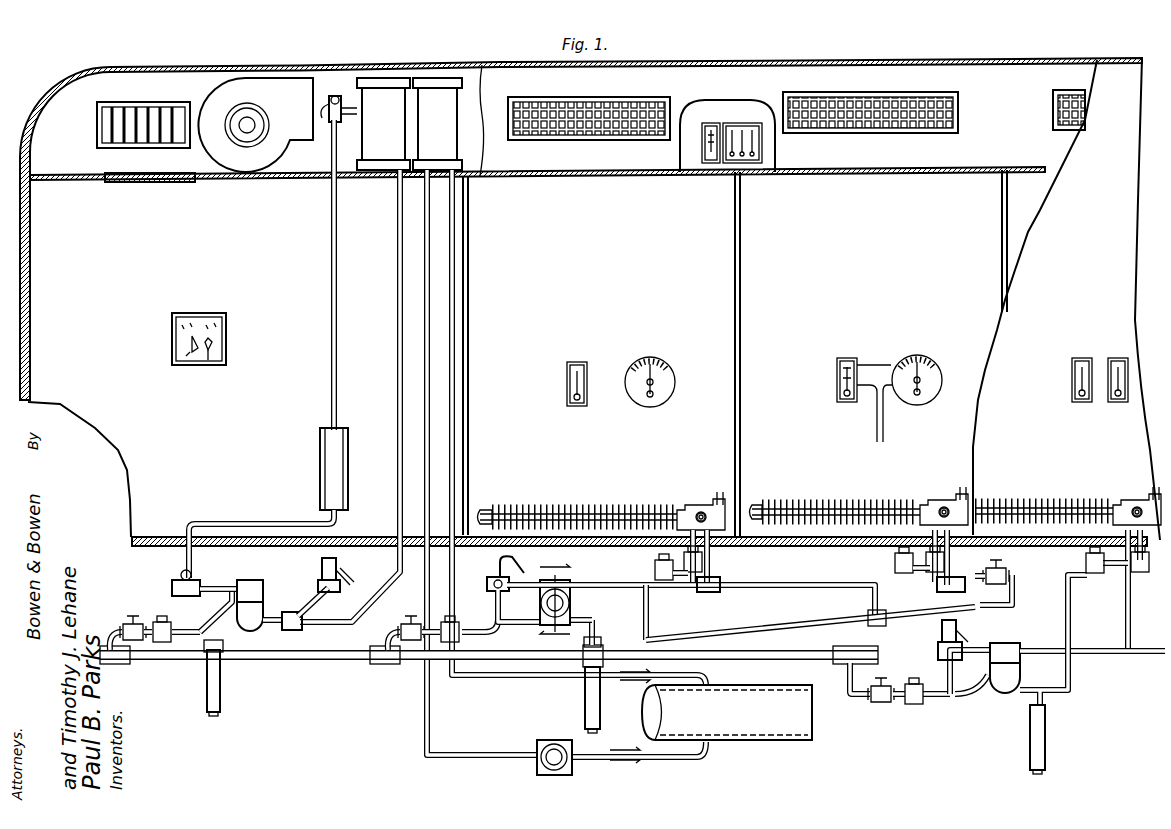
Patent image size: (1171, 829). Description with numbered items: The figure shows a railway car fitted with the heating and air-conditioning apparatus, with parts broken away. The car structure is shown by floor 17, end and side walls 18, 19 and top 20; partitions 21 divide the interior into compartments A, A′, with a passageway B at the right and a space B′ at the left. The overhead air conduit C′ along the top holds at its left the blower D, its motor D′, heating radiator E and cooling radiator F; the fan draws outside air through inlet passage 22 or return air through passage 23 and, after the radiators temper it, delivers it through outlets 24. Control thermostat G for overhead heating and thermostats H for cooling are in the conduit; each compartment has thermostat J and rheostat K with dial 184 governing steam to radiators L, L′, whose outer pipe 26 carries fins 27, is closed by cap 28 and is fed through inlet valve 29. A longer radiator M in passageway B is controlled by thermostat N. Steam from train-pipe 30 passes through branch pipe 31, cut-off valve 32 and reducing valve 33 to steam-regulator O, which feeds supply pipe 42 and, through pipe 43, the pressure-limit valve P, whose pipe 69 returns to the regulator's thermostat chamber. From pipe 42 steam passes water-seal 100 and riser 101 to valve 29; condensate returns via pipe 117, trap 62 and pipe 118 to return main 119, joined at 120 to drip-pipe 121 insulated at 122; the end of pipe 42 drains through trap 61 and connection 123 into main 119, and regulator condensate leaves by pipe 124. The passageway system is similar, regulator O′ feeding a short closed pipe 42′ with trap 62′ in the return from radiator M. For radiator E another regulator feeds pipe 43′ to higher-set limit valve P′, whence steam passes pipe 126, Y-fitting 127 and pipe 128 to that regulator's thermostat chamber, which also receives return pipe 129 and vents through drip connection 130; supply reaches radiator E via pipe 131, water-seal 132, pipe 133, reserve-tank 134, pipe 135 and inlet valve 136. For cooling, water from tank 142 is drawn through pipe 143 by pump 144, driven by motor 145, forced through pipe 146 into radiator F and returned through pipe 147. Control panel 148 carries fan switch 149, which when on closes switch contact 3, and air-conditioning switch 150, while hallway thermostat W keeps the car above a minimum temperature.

The floor 17 is at (375, 538).
The end wall 18 is at (584, 299).
The side wall 19 is at (88, 410).
The top 20 is at (978, 60).
The partitions 21 is at (468, 338).
The inlet passage 22 is at (97, 125).
The return air passage 23 is at (170, 184).
The delivery ducts 24 is at (600, 138).
The outer pipe 26 is at (676, 512).
The radiating fins 27 is at (512, 507).
The cap member 28 is at (482, 509).
The radiator inlet valve 29 is at (698, 507).
The steam train-pipe 30 is at (320, 660).
The branch supply pipe 31 is at (205, 625).
The main cut-off valve 32 is at (130, 624).
The reducing valve 33 is at (162, 620).
The supply pipe 42 is at (608, 584).
The steam supply pipe 42′ is at (1098, 650).
The pipe 43 is at (520, 572).
The pipe 43′ is at (273, 607).
The trap 61 is at (1006, 576).
The trap 62 is at (660, 570).
The trap 62′ is at (1098, 575).
The pipe 69 is at (519, 617).
The water-seal 100 is at (712, 590).
The riser 101 is at (712, 570).
The pipe 117 is at (890, 505).
The pipe 118 is at (652, 615).
The return main 119 is at (800, 630).
The connection 120 is at (600, 640).
The drip-pipe 121 is at (583, 662).
The insulation 122 is at (585, 705).
The pipe connection 123 is at (1016, 598).
The pipe 124 is at (593, 618).
The pipe 126 is at (330, 598).
The Y-fitting 127 is at (306, 628).
The pipe 128 is at (285, 630).
The return pipe 129 is at (398, 275).
The drip connection 130 is at (210, 712).
The pipe 131 is at (215, 588).
The water-seal 132 is at (175, 580).
The pipe 133 is at (190, 528).
The reserve-tank 134 is at (320, 448).
The pipe 135 is at (331, 287).
The inlet valve 136 is at (336, 94).
The tank 142 is at (812, 735).
The pipe 143 is at (655, 763).
The pump 144 is at (537, 766).
The motor 145 is at (552, 746).
The pipe 146 is at (432, 198).
The pipe 147 is at (455, 212).
The control panel 148 is at (185, 348).
The fan switch 149 is at (110, 355).
The air-conditioning switch 150 is at (213, 362).
The dial 184 is at (640, 363).
The switch contact 3 is at (555, 599).
The compartment A is at (541, 208).
The compartment A′ is at (862, 195).
The passageway B is at (1103, 318).
The space B′ is at (135, 405).
The overhead air-circulating conduit C′ is at (690, 172).
The blower D is at (265, 95).
The motor D′ is at (240, 120).
The heating radiator E is at (380, 95).
The cooling radiator F is at (430, 100).
The control thermostat G is at (702, 148).
The thermostats H is at (762, 148).
The controlling thermostat J is at (566, 380).
The rheostat K is at (668, 372).
The compartment radiator L is at (578, 502).
The compartment radiator L′ is at (836, 497).
The radiator M is at (1010, 508).
The thermostat N is at (1071, 380).
The steam-regulator O is at (566, 600).
The steam regulator O′ is at (1010, 645).
The pressure-limit valve P is at (492, 577).
The pressure-limit valve P′ is at (333, 572).
The thermostat W is at (1117, 402).